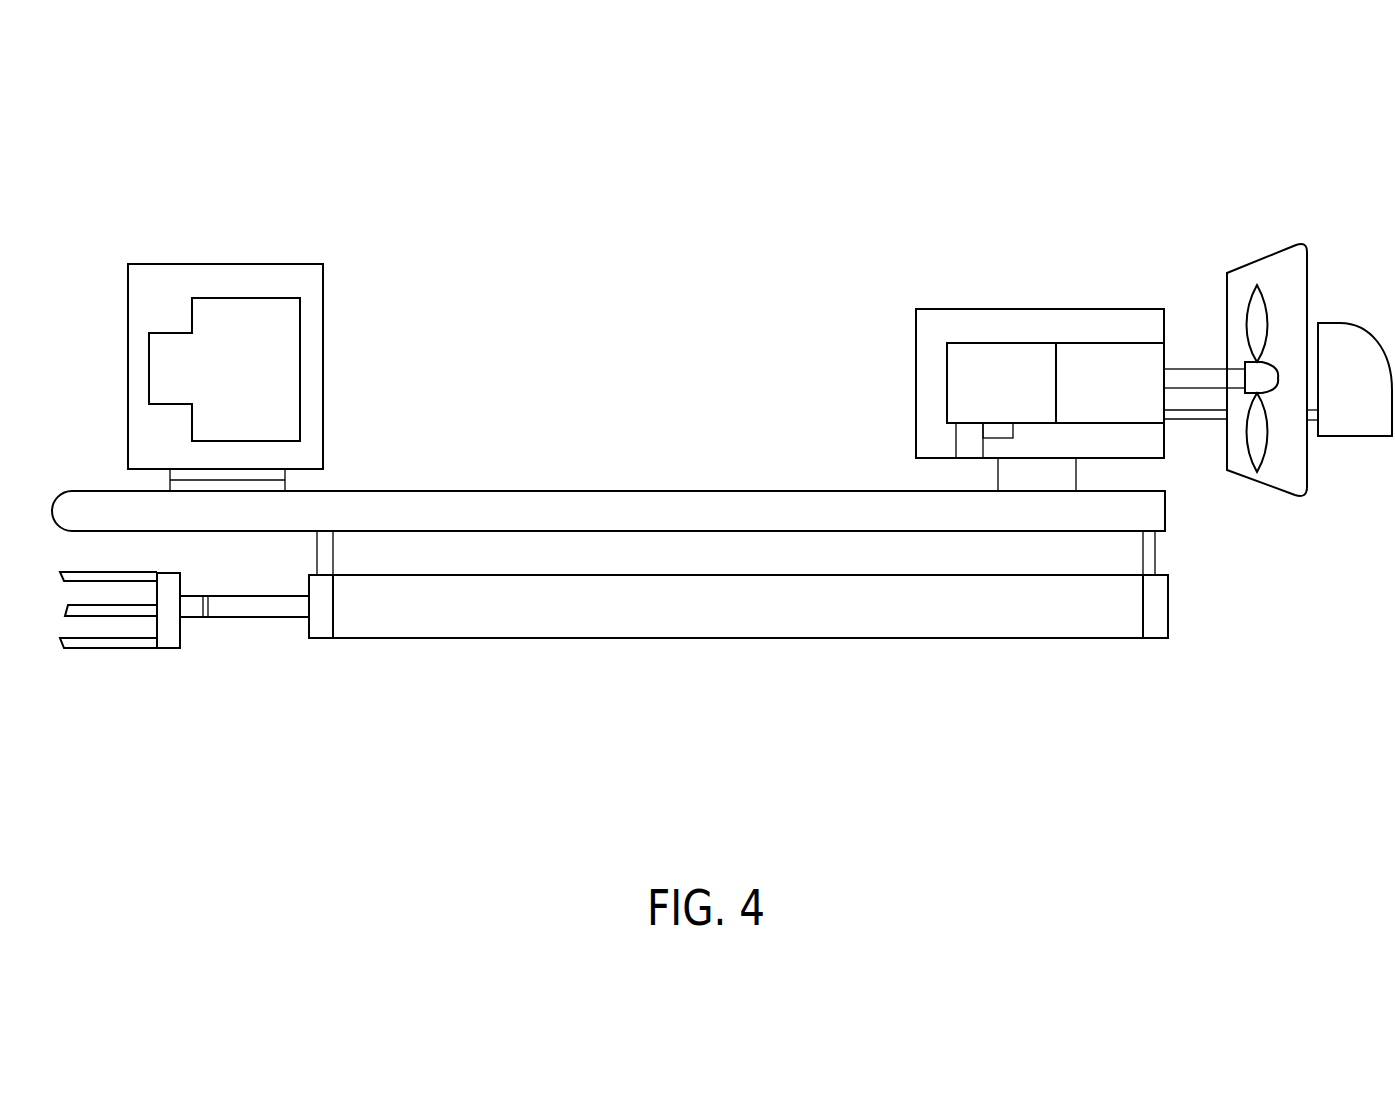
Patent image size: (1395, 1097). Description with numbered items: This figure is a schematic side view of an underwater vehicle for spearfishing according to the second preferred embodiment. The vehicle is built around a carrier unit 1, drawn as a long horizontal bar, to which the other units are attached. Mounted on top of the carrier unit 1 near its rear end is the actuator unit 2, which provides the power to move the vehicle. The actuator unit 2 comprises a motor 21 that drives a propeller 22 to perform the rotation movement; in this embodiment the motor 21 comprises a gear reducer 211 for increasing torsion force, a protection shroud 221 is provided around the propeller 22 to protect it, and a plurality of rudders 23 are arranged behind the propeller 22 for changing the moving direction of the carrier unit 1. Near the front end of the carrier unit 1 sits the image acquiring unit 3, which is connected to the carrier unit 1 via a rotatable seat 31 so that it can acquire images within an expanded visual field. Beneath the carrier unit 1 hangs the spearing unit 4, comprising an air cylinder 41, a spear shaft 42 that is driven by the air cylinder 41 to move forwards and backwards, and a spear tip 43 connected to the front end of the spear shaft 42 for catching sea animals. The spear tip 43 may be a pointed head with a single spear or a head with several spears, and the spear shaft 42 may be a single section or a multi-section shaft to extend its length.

The carrier unit 1 is at (462, 492).
The actuator unit 2 is at (958, 307).
The motor 21 is at (1085, 377).
The gear reducer 211 is at (992, 380).
The propeller 22 is at (1260, 377).
The protection shroud 221 is at (1252, 255).
The rudder 23 is at (1358, 417).
The image acquiring unit 3 is at (328, 258).
The rotatable seat 31 is at (278, 487).
The spearing unit 4 is at (614, 676).
The air cylinder 41 is at (1115, 608).
The spear shaft 42 is at (272, 607).
The spear tip 43 is at (167, 630).